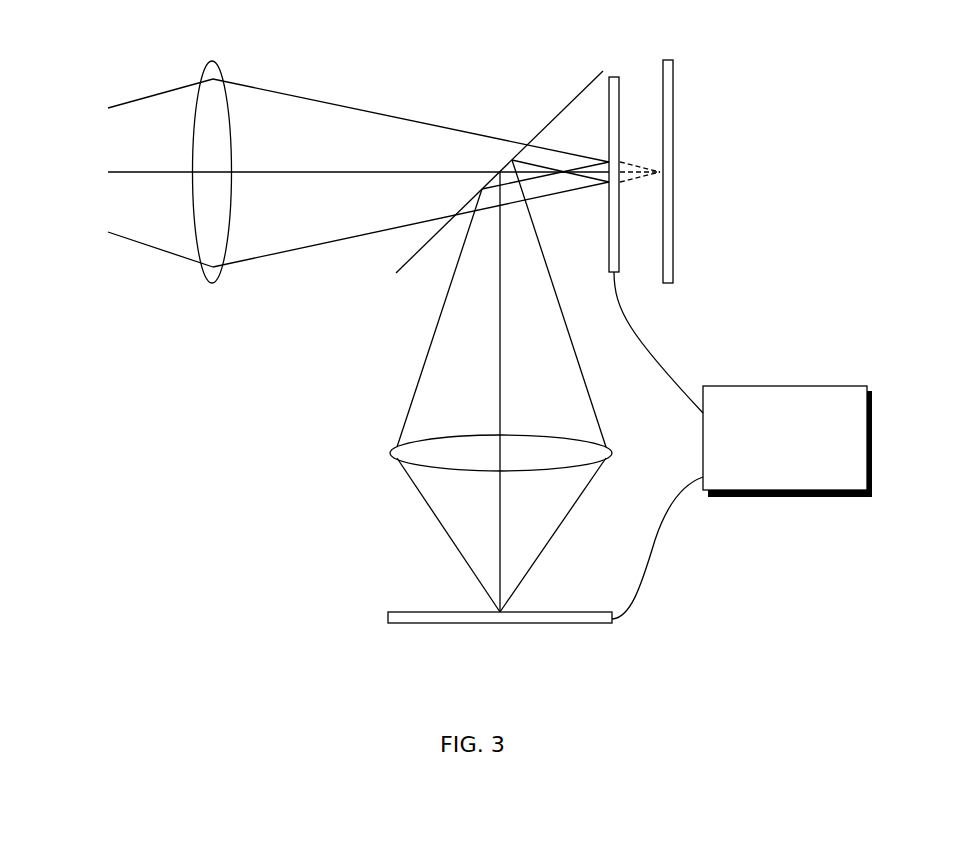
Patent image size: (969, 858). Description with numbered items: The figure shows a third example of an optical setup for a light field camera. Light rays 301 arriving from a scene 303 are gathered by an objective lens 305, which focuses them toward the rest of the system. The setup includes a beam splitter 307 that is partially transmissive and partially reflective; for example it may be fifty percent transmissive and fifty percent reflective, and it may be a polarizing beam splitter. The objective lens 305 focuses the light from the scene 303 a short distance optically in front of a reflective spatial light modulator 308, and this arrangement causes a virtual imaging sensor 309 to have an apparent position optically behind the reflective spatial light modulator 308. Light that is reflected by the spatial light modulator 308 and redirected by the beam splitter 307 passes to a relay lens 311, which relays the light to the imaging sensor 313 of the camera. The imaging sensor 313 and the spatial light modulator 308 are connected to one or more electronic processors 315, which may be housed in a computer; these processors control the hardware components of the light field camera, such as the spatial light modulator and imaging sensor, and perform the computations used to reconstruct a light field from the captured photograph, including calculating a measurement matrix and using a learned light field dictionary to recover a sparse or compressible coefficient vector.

The light rays 301 is at (131, 74).
The scene 303 is at (78, 144).
The objective lens 305 is at (219, 68).
The beam splitter 307 is at (553, 120).
The reflective spatial light modulator 308 is at (620, 80).
The virtual imaging sensor 309 is at (673, 75).
The relay lens 311 is at (390, 453).
The imaging sensor 313 is at (387, 615).
The electronic processor 315 is at (800, 465).